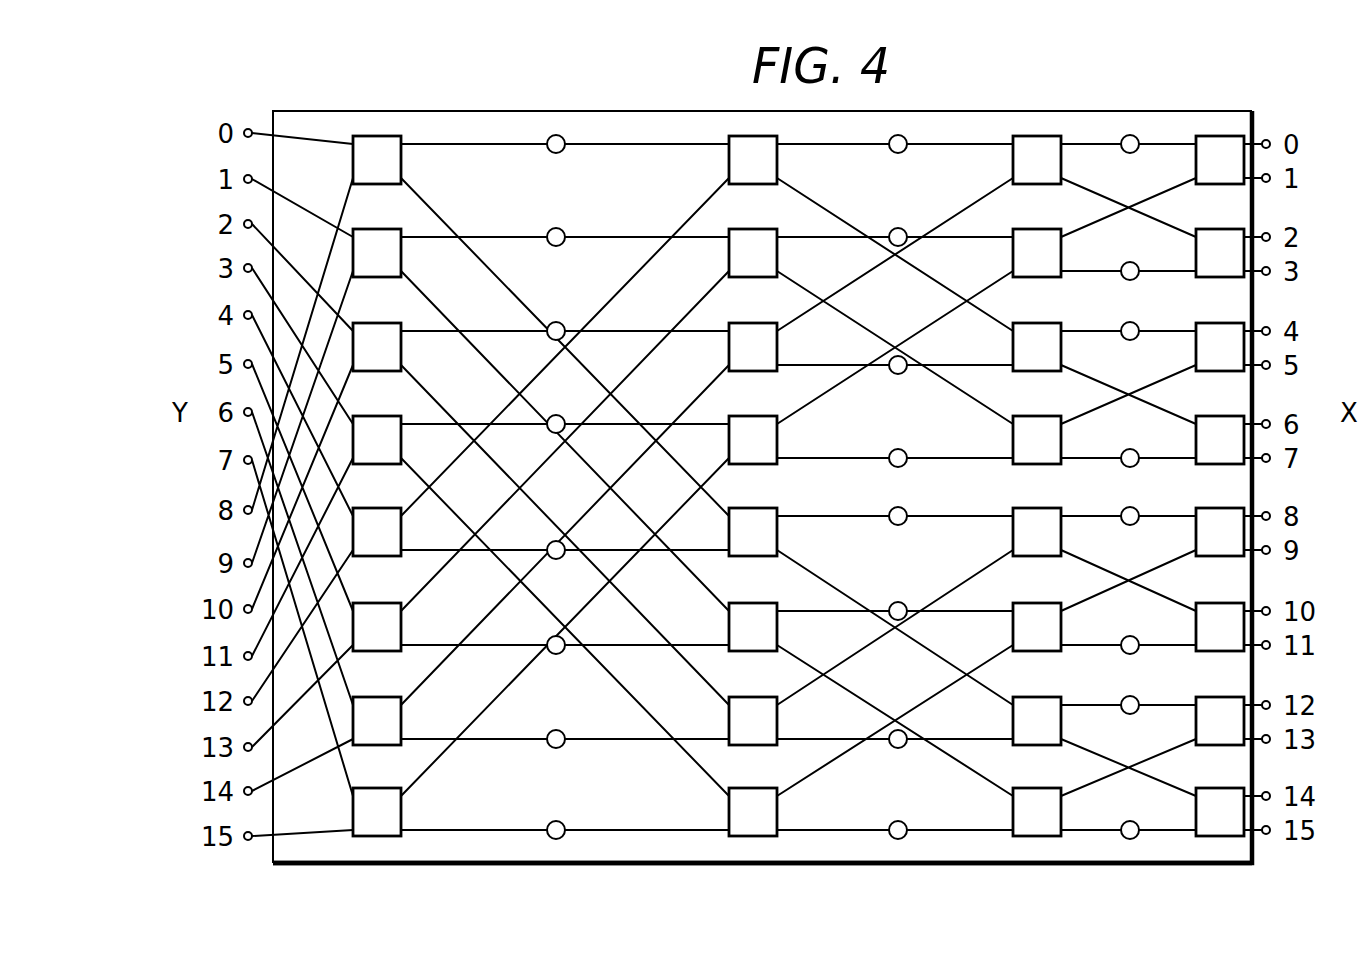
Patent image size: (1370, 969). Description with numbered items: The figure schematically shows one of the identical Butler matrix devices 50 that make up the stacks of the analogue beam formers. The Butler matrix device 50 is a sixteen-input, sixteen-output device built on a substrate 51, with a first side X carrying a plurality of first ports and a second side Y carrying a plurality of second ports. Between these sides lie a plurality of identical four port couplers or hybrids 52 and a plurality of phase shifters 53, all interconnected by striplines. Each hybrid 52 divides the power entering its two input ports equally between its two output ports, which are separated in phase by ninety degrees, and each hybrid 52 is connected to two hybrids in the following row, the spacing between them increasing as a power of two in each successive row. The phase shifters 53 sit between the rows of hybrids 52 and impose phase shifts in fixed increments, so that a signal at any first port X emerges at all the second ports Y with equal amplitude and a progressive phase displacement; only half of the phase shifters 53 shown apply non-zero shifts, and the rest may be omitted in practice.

The Butler matrix device 50 is at (1163, 865).
The substrate 51 is at (818, 843).
The four port coupler or hybrid 52 is at (403, 155).
The phase shifter 53 is at (560, 136).